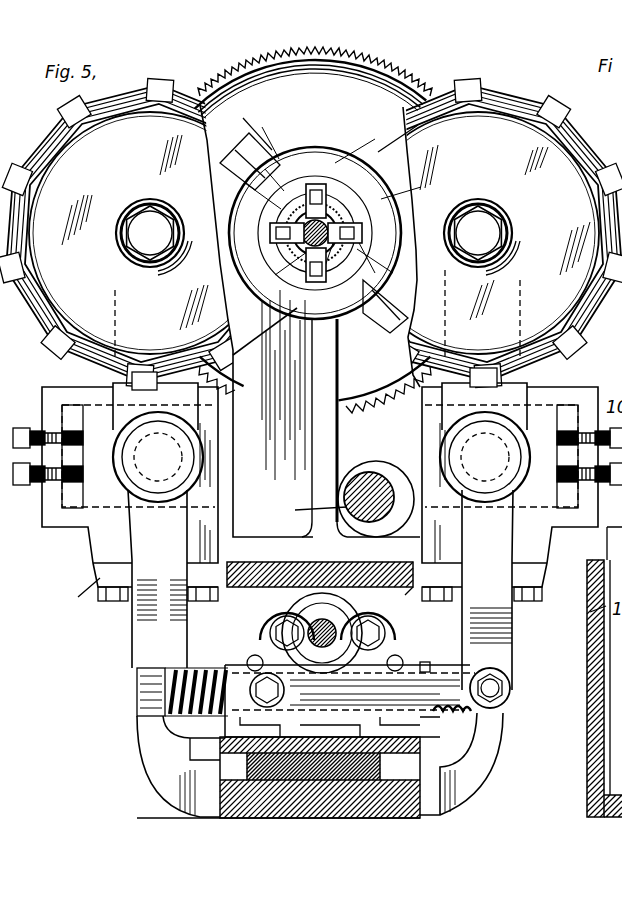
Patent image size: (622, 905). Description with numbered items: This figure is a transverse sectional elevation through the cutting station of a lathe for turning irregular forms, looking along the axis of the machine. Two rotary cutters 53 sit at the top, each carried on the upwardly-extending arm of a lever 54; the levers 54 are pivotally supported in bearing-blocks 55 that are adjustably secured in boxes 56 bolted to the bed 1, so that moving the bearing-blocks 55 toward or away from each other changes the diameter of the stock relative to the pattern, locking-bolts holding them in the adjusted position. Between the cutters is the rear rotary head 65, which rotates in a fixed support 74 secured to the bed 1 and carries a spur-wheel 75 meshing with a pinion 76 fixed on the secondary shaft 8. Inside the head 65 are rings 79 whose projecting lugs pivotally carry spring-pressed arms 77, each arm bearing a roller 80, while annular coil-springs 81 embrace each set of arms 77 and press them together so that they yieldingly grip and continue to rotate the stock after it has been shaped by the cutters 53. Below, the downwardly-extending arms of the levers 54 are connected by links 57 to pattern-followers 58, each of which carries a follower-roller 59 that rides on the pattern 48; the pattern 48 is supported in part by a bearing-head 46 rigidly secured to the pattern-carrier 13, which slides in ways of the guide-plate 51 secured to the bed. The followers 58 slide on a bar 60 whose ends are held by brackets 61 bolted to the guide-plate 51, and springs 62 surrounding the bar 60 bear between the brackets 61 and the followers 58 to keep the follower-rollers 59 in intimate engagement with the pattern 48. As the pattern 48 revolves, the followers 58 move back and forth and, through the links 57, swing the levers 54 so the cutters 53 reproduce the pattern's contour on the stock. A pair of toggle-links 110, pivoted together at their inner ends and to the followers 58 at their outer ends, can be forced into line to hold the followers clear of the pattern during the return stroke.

The rotary cutters 53 is at (311, 232).
The rings 79 is at (298, 175).
The rotary head 65 is at (322, 162).
The annular coil-springs 81 is at (340, 207).
The spring-pressed arms 77 is at (286, 228).
The roller 80 is at (295, 246).
The fixed support 74 is at (315, 428).
The spur-wheel 75 is at (344, 349).
The pinion 76 is at (382, 413).
The secondary shaft 8 is at (314, 510).
The levers 54 is at (321, 529).
The bearing-blocks 55 is at (135, 455).
The boxes 56 is at (43, 508).
The bed 1 is at (232, 596).
The bearing-head 46 is at (310, 612).
The pattern 48 is at (333, 622).
The follower-roller 59 is at (260, 632).
The pattern-followers 58 is at (325, 662).
The links 57 is at (350, 701).
The bar 60 is at (206, 668).
The springs 62 is at (223, 668).
The brackets 61 is at (146, 743).
The toggle-links 110 is at (226, 728).
The pattern-carrier 13 is at (247, 777).
The guide-plate 51 is at (405, 817).